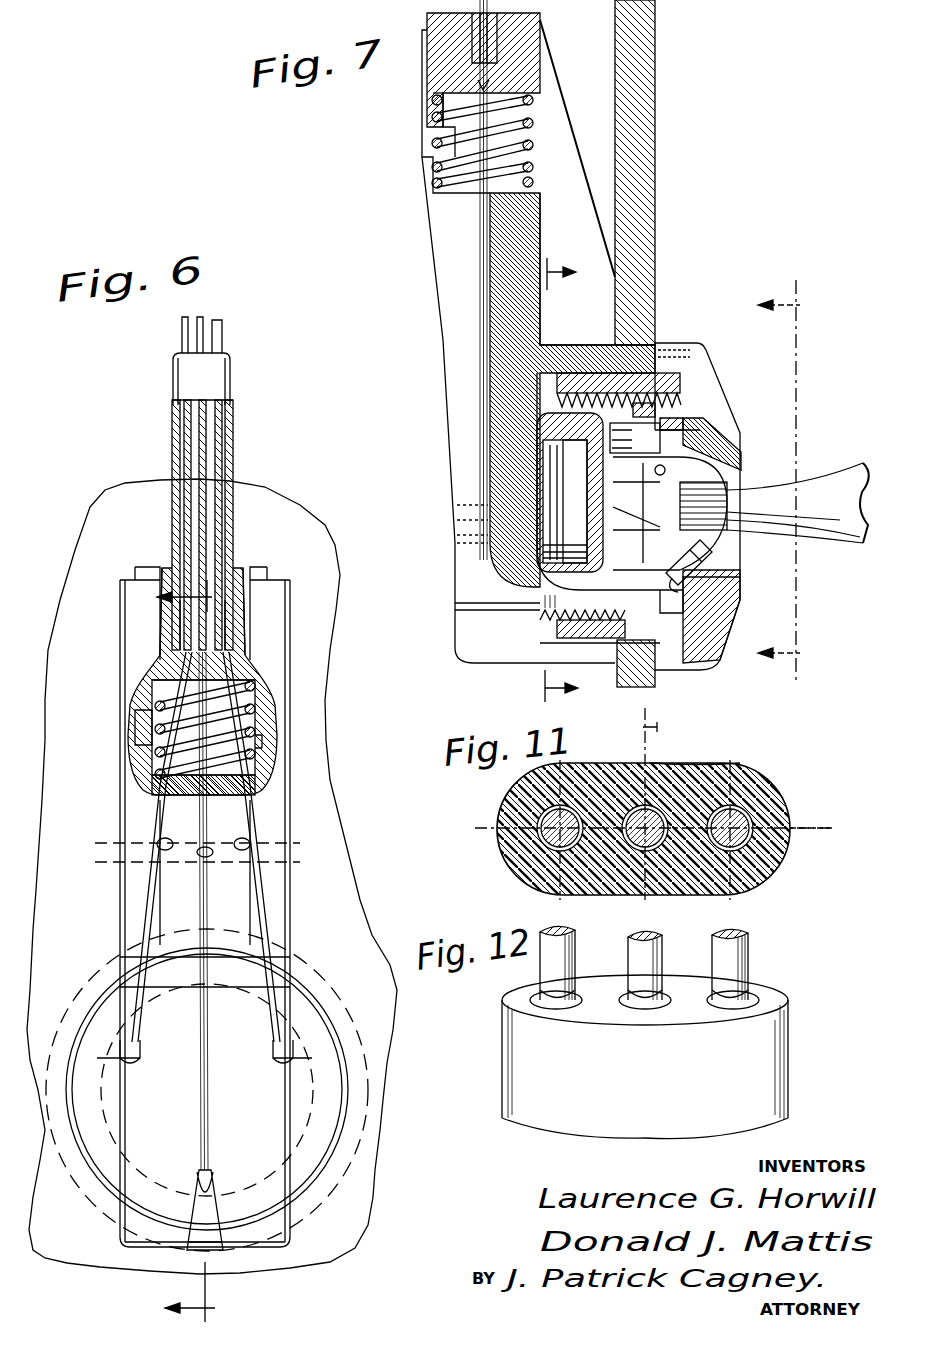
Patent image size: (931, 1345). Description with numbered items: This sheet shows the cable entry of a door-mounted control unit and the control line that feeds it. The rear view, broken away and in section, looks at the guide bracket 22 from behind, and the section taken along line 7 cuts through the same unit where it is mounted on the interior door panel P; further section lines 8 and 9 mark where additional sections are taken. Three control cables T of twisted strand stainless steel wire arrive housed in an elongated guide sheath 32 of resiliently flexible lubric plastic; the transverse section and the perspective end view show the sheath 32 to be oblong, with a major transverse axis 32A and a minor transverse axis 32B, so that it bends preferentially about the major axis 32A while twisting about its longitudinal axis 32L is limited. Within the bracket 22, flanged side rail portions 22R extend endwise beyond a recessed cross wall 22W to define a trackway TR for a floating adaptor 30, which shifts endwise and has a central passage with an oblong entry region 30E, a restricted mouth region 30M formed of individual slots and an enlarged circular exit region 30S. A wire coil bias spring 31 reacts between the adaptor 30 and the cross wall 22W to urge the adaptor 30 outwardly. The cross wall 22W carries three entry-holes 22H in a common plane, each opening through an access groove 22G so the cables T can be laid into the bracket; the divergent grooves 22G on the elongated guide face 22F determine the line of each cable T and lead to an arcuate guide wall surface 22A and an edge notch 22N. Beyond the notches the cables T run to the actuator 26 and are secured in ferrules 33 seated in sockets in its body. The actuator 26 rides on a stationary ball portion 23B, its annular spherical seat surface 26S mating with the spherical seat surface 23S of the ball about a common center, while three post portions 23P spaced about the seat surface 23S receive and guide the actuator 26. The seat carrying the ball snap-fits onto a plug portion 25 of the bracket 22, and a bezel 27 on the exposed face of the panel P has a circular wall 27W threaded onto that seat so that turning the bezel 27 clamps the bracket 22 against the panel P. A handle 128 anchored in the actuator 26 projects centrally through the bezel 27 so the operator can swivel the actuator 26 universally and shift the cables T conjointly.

In FIG. 6, the guide bracket 22 is at (224, 907).
In FIG. 7, the guide bracket 22 is at (462, 556).
In FIG. 6, the flanged side rail portions 22R is at (280, 600).
In FIG. 7, the flanged side rail portions 22R is at (422, 45).
In FIG. 6, the guide face 22F is at (235, 880).
In FIG. 7, the guide face 22F is at (432, 252).
In FIG. 6, the cross wall 22W is at (240, 790).
In FIG. 7, the cross wall 22W is at (522, 178).
In FIG. 6, the entry-holes 22H is at (165, 775).
In FIG. 6, the grooves 22G is at (158, 846).
In FIG. 6, the edge notch 22N is at (128, 1059).
In FIG. 7, the arcuate guide wall surface 22A is at (497, 582).
In FIG. 6, the floating adaptor 30 is at (245, 678).
In FIG. 7, the floating adaptor 30 is at (470, 36).
In FIG. 6, the entry region 30E is at (215, 582).
In FIG. 7, the entry region 30E is at (495, 42).
In FIG. 6, the restricted mouth region 30M is at (172, 678).
In FIG. 7, the restricted mouth region 30M is at (486, 92).
In FIG. 6, the exit region 30S is at (167, 690).
In FIG. 7, the exit region 30S is at (442, 103).
In FIG. 6, the bias spring 31 is at (250, 722).
In FIG. 7, the bias spring 31 is at (522, 140).
In FIG. 6, the trackway TR is at (278, 757).
In FIG. 6, the control cables T is at (218, 322).
In FIG. 7, the control cables T is at (480, 211).
In FIG. 11, the control cables T is at (648, 818).
In FIG. 12, the control cables T is at (578, 955).
In FIG. 6, the guide sheath 32 is at (233, 442).
In FIG. 11, the guide sheath 32 is at (785, 865).
In FIG. 12, the guide sheath 32 is at (786, 1052).
In FIG. 11, the major transverse axis 32A is at (815, 826).
In FIG. 11, the minor transverse axis 32B is at (652, 740).
In FIG. 11, the longitudinal axis 32L is at (690, 780).
In FIG. 7, the interior door panel P is at (648, 252).
In FIG. 7, the bezel 27 is at (680, 378).
In FIG. 7, the circular wall 27W is at (600, 385).
In FIG. 7, the post portions 23P is at (648, 435).
In FIG. 7, the stationary ball portion 23B is at (670, 513).
In FIG. 7, the spherical seat surface 23S is at (636, 531).
In FIG. 7, the plug portion 25 is at (570, 500).
In FIG. 7, the actuator 26 is at (712, 472).
In FIG. 7, the spherical seat surface 26S is at (700, 450).
In FIG. 7, the ferrules 33 is at (705, 568).
In FIG. 7, the handle 128 is at (848, 535).
In FIG. 6, the section line 7 is at (171, 953).
In FIG. 7, the section line 8- 8 is at (569, 483).
In FIG. 7, the section line 9- 9 is at (790, 481).